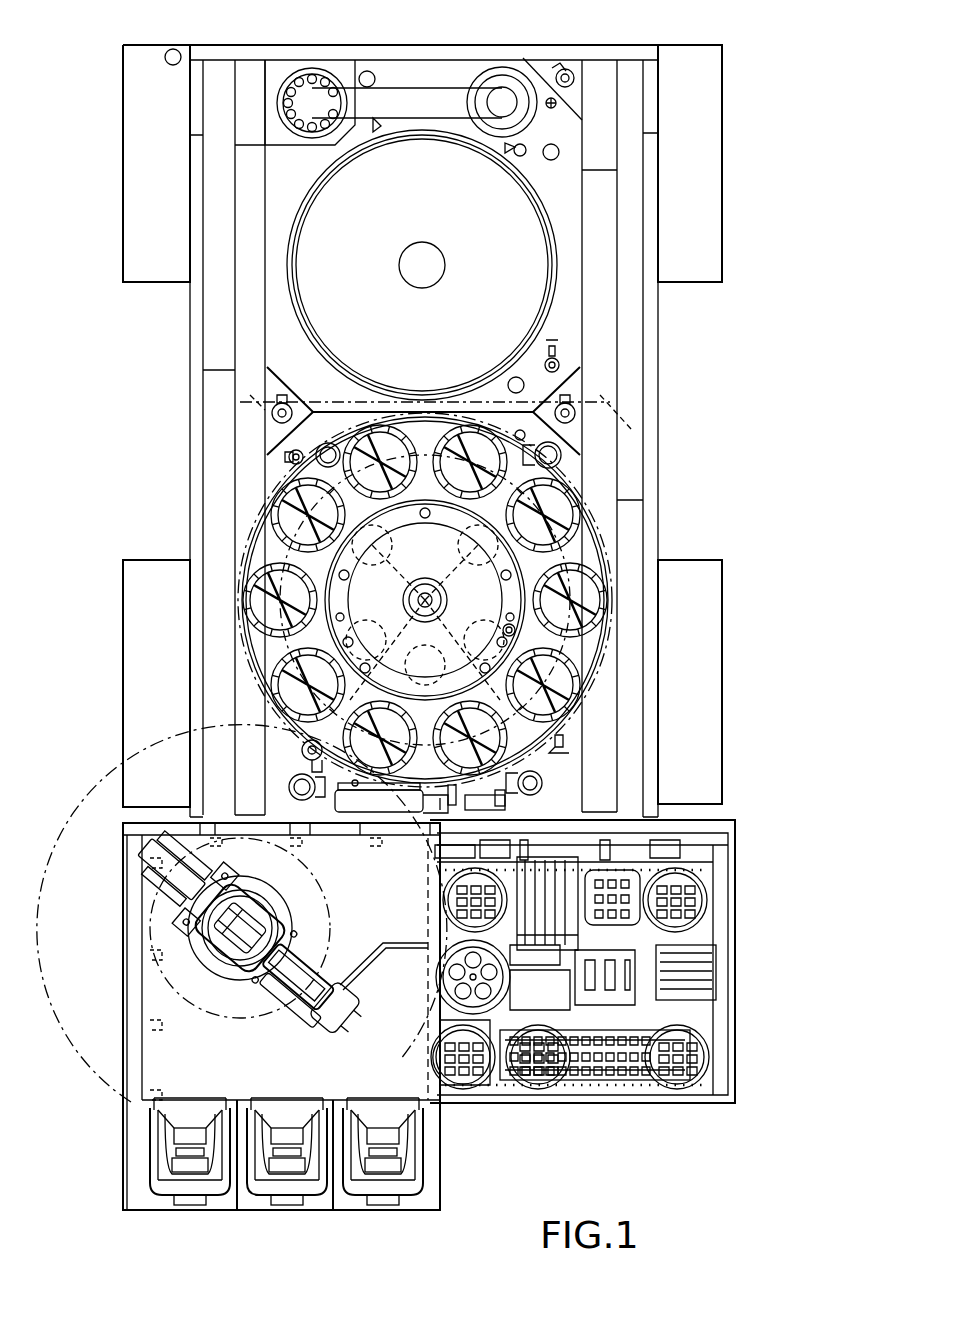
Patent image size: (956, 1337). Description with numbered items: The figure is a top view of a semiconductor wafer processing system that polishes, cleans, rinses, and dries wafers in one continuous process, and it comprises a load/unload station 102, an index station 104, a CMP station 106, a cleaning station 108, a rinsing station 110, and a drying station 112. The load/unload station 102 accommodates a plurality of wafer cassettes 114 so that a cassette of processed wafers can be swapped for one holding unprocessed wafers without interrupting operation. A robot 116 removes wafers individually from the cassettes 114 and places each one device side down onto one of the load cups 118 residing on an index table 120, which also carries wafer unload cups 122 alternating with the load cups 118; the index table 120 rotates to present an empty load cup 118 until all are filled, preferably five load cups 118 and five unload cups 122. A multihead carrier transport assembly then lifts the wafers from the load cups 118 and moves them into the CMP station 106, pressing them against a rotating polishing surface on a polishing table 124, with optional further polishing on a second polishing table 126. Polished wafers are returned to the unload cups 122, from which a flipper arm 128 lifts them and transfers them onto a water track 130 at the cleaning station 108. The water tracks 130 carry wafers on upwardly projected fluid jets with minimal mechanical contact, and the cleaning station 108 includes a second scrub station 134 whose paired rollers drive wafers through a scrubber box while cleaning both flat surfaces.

The load/unload station 102 is at (105, 1115).
The index station 104 is at (461, 600).
The CMP station 106 is at (575, 310).
The cleaning station 108 is at (688, 848).
The rinsing station 110 is at (483, 1100).
The drying station 112 is at (407, 972).
The wafer cassettes 114 is at (195, 1215).
The robot 116 is at (190, 925).
The load cups 118 is at (255, 598).
The index table 120 is at (272, 548).
The wafer unload cups 122 is at (296, 510).
The polishing table 124 is at (330, 292).
The second polishing table 126 is at (485, 605).
The flipper arm 128 is at (520, 803).
The water tracks 130 is at (705, 867).
The second scrub station 134 is at (722, 972).